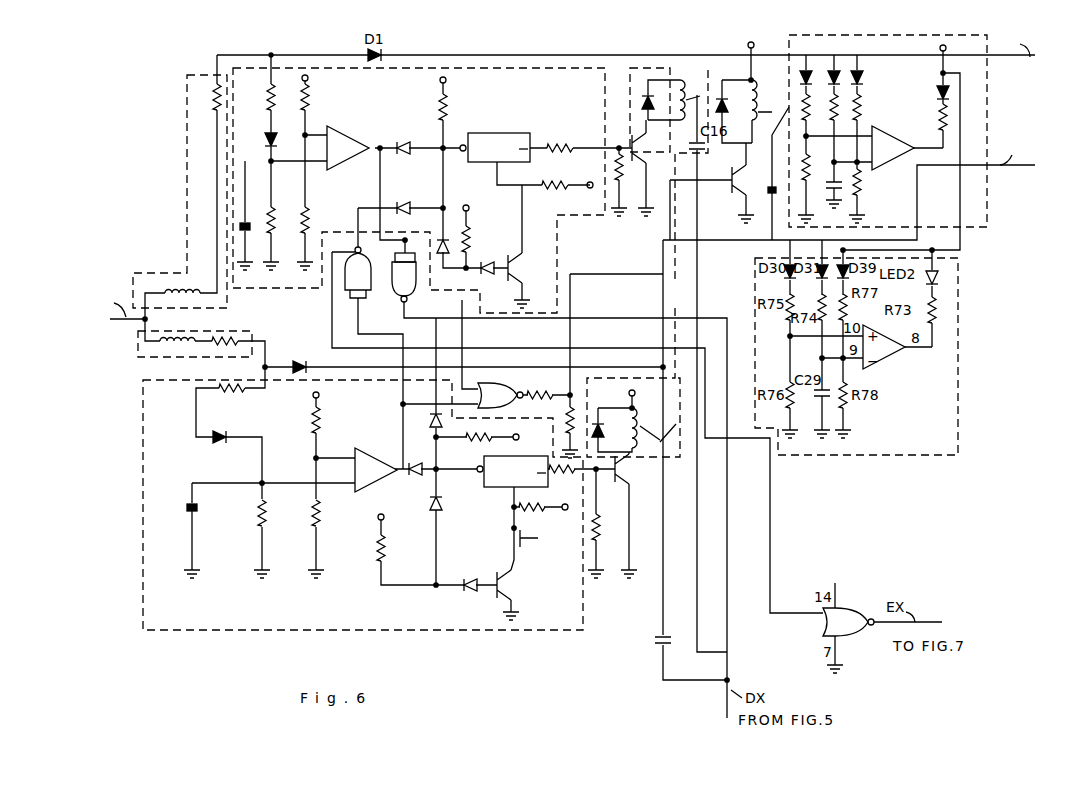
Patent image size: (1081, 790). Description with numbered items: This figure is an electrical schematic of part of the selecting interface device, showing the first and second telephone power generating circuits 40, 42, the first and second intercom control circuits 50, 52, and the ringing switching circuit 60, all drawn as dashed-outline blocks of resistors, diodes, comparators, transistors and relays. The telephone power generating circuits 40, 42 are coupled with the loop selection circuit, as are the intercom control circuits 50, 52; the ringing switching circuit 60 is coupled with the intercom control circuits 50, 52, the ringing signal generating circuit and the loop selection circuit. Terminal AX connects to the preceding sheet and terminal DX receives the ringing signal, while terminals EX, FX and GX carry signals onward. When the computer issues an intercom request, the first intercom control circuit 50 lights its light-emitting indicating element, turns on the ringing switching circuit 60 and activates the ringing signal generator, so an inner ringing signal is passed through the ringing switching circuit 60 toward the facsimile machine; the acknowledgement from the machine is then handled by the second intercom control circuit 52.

The first telephone power generating circuit 40 is at (187, 117).
The second telephone power generating circuit 42 is at (143, 413).
The first intercom control circuit 50 is at (788, 34).
The second intercom control circuit 52 is at (820, 458).
The ringing switching circuit 60 is at (686, 303).